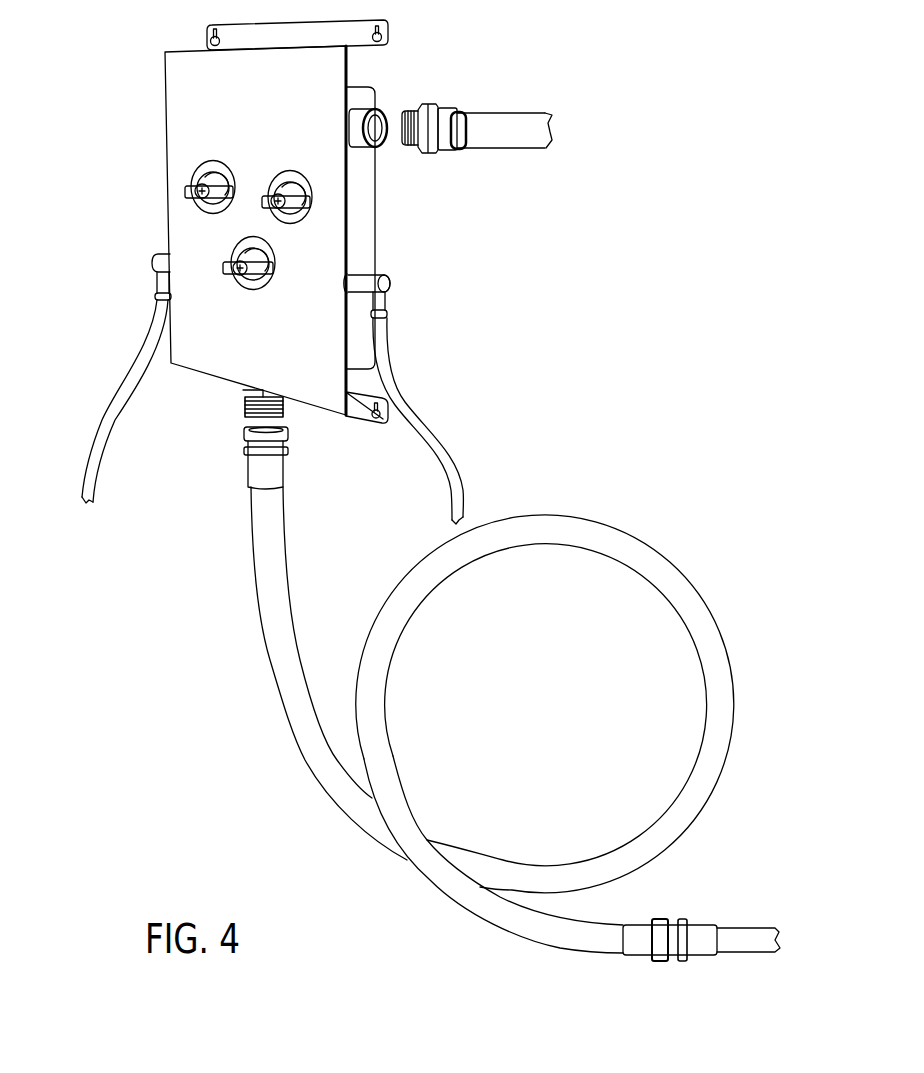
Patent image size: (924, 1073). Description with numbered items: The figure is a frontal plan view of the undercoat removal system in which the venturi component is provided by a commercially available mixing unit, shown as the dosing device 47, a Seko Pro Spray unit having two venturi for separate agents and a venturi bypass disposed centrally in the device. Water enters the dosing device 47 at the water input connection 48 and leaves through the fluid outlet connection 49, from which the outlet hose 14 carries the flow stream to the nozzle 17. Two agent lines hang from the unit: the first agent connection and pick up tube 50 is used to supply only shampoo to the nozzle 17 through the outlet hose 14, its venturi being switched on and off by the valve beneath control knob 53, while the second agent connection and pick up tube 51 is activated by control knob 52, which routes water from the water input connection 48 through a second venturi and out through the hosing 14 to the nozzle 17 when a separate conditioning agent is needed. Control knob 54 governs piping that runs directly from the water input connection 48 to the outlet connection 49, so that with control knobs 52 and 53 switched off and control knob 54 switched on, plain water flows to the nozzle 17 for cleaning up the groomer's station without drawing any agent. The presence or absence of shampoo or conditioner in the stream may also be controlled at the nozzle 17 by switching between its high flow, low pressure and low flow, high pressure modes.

The outlet hose 14 is at (717, 676).
The nozzle 17 is at (740, 955).
The dosing device 47 is at (609, 84).
The water input connection 48 is at (381, 113).
The fluid outlet connection 49 is at (247, 412).
The first agent connection and pick up tube 50 is at (469, 325).
The second agent connection and pick up tube 51 is at (138, 551).
The control knob 52 is at (195, 182).
The control knob 53 is at (315, 197).
The control knob 54 is at (237, 285).